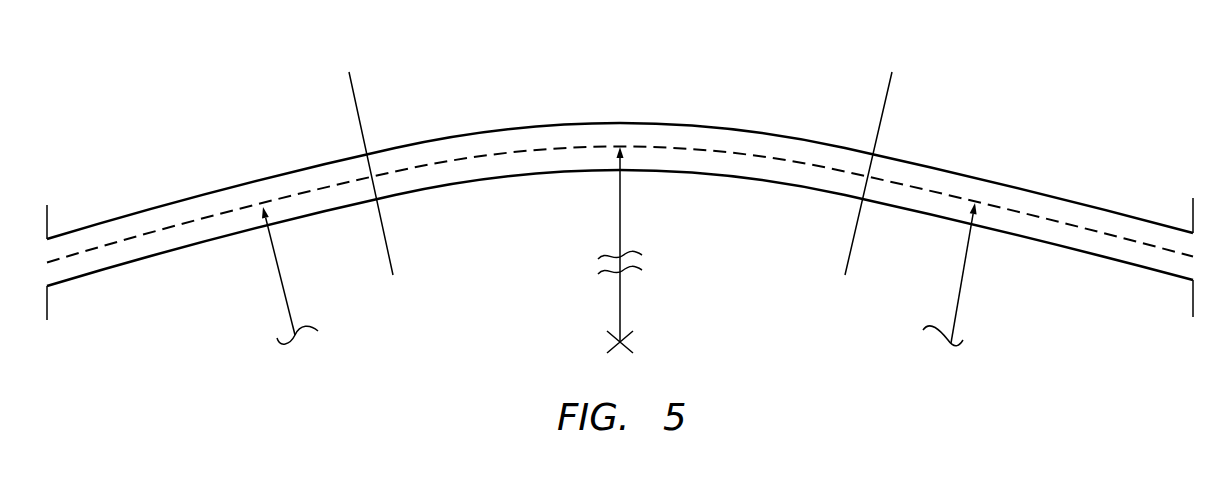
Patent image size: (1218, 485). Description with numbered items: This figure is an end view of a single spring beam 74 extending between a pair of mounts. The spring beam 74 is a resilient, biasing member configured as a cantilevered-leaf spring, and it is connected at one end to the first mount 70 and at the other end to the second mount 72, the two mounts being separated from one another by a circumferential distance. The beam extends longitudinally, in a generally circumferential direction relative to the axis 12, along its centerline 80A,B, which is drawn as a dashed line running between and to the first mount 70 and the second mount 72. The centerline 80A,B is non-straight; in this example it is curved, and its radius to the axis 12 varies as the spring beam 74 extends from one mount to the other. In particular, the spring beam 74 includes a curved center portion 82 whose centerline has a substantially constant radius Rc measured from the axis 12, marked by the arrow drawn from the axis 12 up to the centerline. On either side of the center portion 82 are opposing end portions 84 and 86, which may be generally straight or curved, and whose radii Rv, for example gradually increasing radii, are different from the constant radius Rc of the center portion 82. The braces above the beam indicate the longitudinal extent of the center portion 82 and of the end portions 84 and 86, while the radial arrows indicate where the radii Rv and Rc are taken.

The axis 12 is at (630, 342).
The first mount 70 is at (47, 303).
The second mount 72 is at (1191, 297).
The spring beam 74 is at (198, 270).
The centerline 80A,B is at (1041, 213).
The curved center portion 82 is at (888, 71).
The end portion 84 is at (348, 70).
The end portion 86 is at (894, 70).
The constant radius Rc is at (620, 218).
The variable radius Rv is at (288, 300).